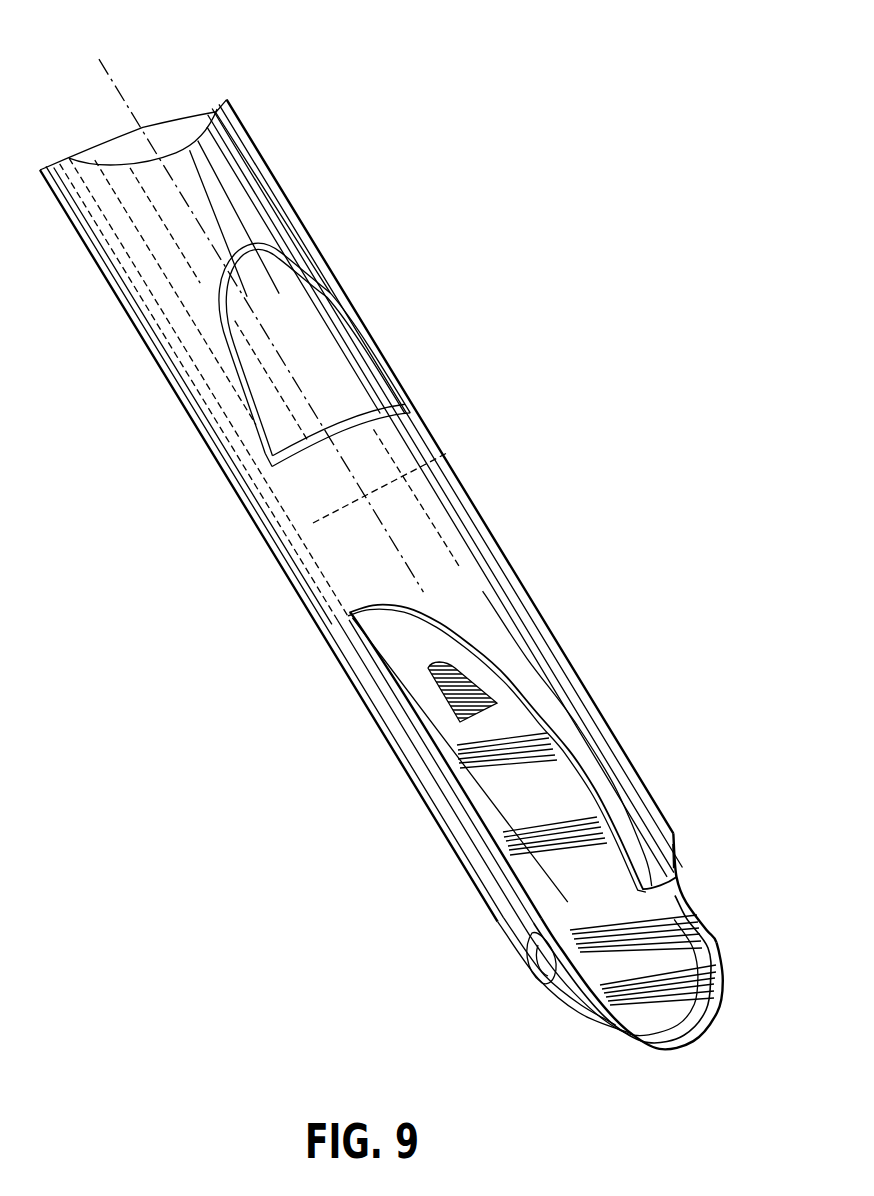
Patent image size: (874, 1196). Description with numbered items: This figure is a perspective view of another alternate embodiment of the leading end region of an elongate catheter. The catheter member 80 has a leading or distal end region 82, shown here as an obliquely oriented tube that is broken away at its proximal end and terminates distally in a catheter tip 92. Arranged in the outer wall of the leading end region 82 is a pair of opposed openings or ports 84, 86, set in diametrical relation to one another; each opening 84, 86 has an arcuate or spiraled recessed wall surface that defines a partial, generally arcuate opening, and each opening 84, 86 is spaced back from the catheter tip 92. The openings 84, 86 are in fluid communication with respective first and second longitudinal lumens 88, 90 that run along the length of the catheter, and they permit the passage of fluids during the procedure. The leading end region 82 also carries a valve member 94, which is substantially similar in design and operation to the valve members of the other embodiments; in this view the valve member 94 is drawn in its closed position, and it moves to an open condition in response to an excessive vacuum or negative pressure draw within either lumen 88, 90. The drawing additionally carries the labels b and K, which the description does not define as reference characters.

The catheter member 80 is at (358, 265).
The leading end region 82 is at (597, 693).
The opening 84 is at (462, 723).
The opening 86 is at (540, 980).
The first longitudinal lumen 88 is at (165, 137).
The second longitudinal lumen 90 is at (190, 387).
The catheter tip 92 is at (683, 1047).
The valve member 94 is at (340, 365).
The diameter b is at (318, 529).
The axis K is at (415, 568).